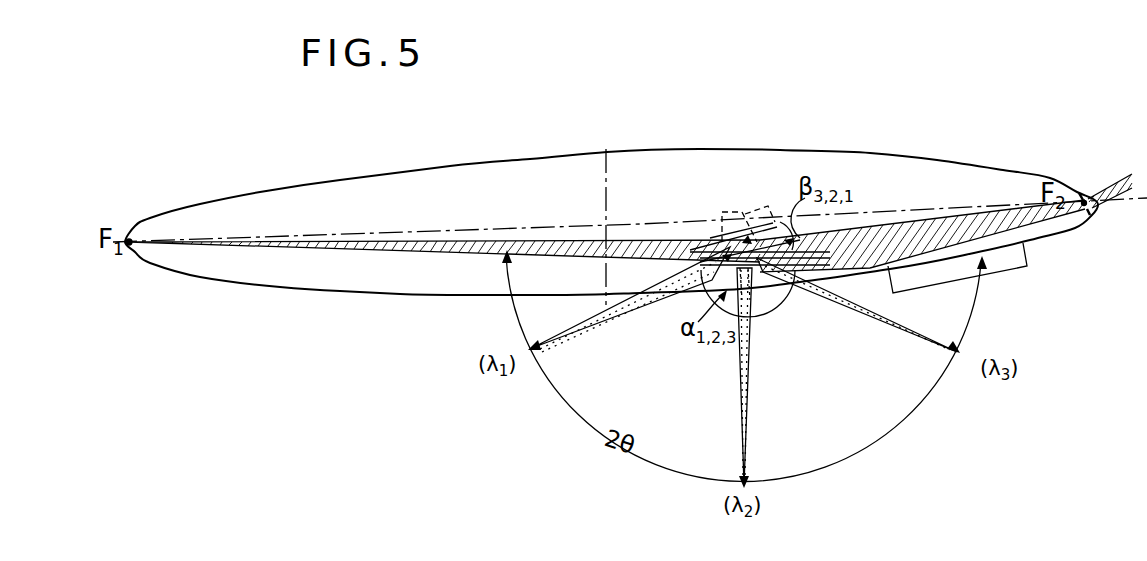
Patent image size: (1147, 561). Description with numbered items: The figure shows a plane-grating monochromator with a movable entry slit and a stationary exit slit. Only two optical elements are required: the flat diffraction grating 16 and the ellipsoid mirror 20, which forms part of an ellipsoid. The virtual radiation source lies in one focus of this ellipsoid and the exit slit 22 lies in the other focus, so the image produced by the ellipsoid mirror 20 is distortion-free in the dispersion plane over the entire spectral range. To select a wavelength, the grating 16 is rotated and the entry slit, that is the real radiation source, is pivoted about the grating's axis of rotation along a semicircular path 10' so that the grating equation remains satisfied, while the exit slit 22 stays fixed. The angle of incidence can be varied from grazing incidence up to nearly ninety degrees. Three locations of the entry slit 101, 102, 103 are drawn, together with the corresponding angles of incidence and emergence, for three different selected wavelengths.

The flat diffraction grating 16 is at (710, 240).
The ellipsoid mirror 20 is at (1013, 256).
The exit slit 22 is at (1083, 192).
The location of the entry slit for wavelength λ1 101 is at (538, 352).
The location of the entry slit for wavelength λ2 102 is at (750, 483).
The location of the entry slit for wavelength λ3 103 is at (955, 352).
The semicircular path 10' is at (744, 367).